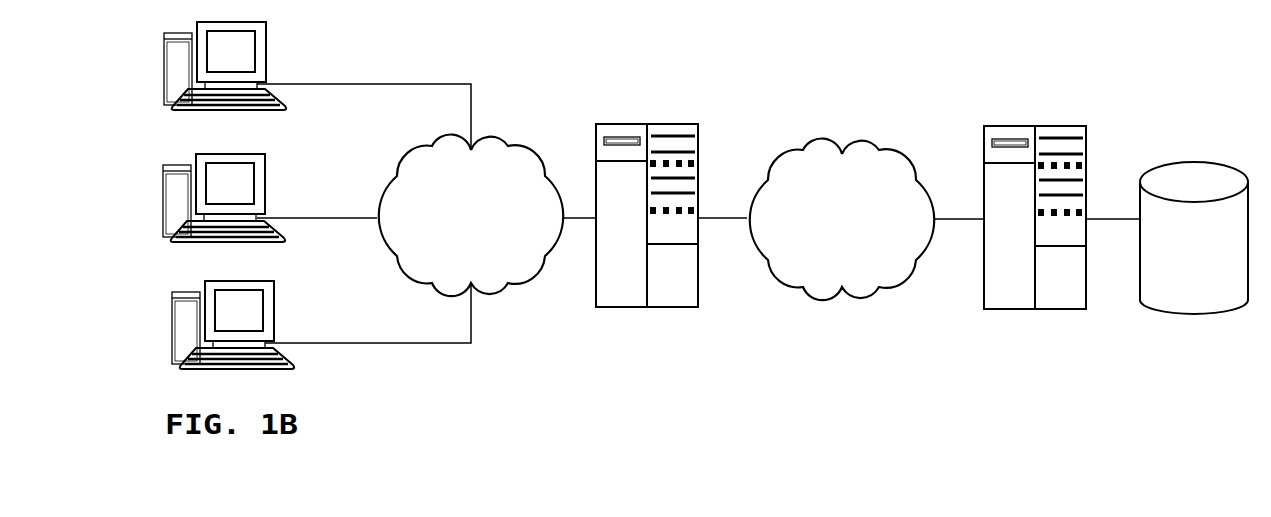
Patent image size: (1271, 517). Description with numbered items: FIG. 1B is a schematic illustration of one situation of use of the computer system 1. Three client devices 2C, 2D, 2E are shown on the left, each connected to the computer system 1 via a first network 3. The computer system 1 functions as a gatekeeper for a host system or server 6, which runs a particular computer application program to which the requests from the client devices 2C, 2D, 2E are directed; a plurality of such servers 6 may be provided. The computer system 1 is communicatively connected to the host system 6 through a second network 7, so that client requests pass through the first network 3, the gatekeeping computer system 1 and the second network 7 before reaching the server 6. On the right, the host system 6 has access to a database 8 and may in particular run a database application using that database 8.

The client device 2C is at (201, 66).
The client device 2D is at (201, 198).
The client device 2E is at (205, 325).
The first network 3 is at (483, 224).
The computer system 1 is at (647, 193).
The second network 7 is at (854, 227).
The host system or server 6 is at (1035, 196).
The database 8 is at (1194, 216).